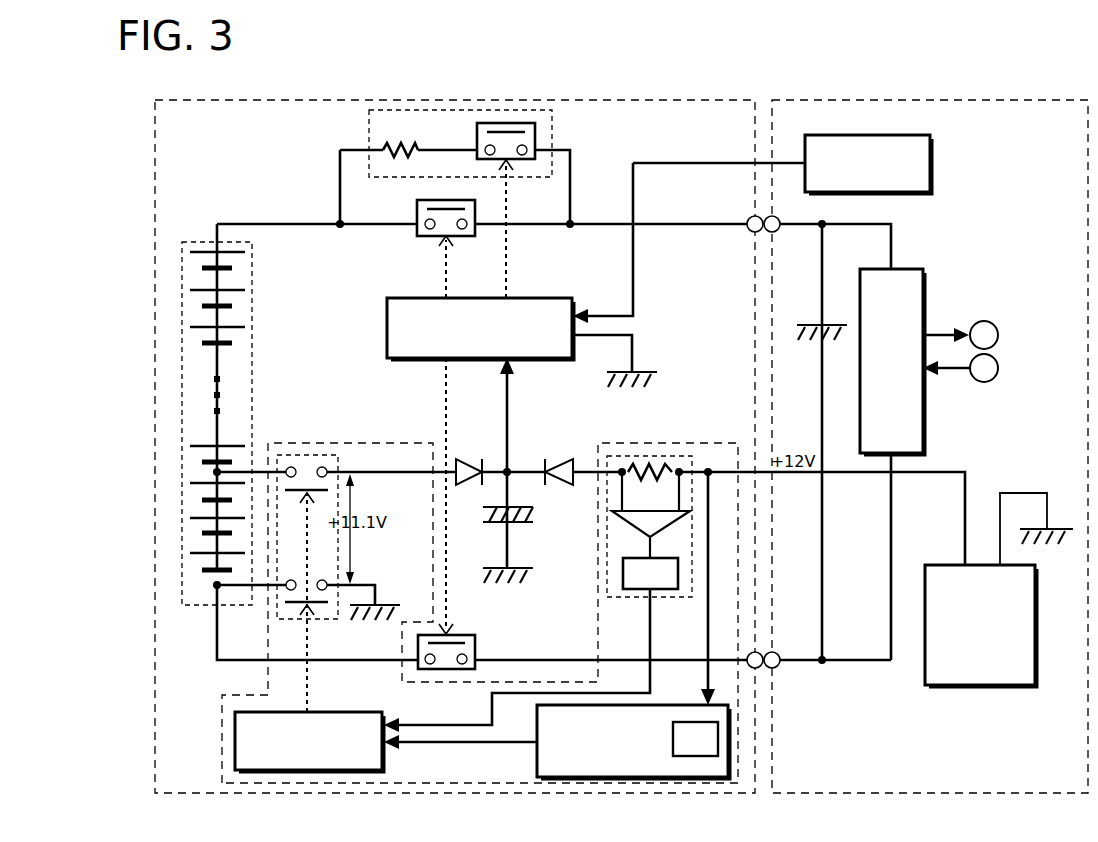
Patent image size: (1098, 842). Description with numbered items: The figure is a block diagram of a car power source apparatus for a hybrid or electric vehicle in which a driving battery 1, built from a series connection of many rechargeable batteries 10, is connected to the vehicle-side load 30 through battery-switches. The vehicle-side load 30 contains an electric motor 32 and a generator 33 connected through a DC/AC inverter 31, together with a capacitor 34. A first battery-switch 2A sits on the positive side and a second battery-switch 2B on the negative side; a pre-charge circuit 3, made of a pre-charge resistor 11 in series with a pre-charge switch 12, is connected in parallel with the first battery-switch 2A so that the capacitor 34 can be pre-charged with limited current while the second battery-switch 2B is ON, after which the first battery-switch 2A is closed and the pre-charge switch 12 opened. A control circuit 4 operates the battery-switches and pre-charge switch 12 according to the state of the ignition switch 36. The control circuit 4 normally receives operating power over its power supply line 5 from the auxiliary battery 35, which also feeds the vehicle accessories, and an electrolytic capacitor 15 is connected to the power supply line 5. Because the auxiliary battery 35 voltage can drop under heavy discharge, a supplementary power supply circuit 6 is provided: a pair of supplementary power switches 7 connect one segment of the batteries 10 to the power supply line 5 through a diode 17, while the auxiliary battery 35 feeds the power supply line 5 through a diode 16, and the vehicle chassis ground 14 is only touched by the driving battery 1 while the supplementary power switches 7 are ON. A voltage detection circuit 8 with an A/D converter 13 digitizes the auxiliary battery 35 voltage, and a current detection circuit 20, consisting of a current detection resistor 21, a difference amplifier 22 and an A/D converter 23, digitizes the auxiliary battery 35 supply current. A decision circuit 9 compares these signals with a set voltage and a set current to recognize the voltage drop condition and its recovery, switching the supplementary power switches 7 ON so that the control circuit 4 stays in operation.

The driving battery 1 is at (182, 390).
The first battery-switch 2A is at (425, 238).
The second battery-switch 2B is at (480, 645).
The pre-charge circuit 3 is at (452, 108).
The control circuit 4 is at (575, 297).
The power supply line 5 is at (507, 410).
The supplementary power supply circuit 6 is at (222, 745).
The supplementary power switches 7 is at (307, 453).
The voltage detection circuit 8 is at (670, 703).
The decision circuit 9 is at (335, 710).
The batteries 10 is at (200, 290).
The pre-charge resistor 11 is at (390, 145).
The pre-charge switch 12 is at (505, 122).
The A/D converter 13 is at (728, 730).
The vehicle chassis ground 14 is at (638, 370).
The electrolytic capacitor 15 is at (520, 505).
The diode 16 is at (560, 457).
The diode 17 is at (470, 458).
The current detection circuit 20 is at (668, 455).
The current detection resistor 21 is at (648, 460).
The difference amplifier 22 is at (627, 530).
The A/D converter 23 is at (622, 574).
The vehicle-side load 30 is at (957, 256).
The DC/AC inverter 31 is at (925, 405).
The electric motor 32 is at (995, 323).
The generator 33 is at (998, 375).
The capacitor 34 is at (838, 322).
The auxiliary battery 35 is at (955, 688).
The ignition switch 36 is at (935, 155).